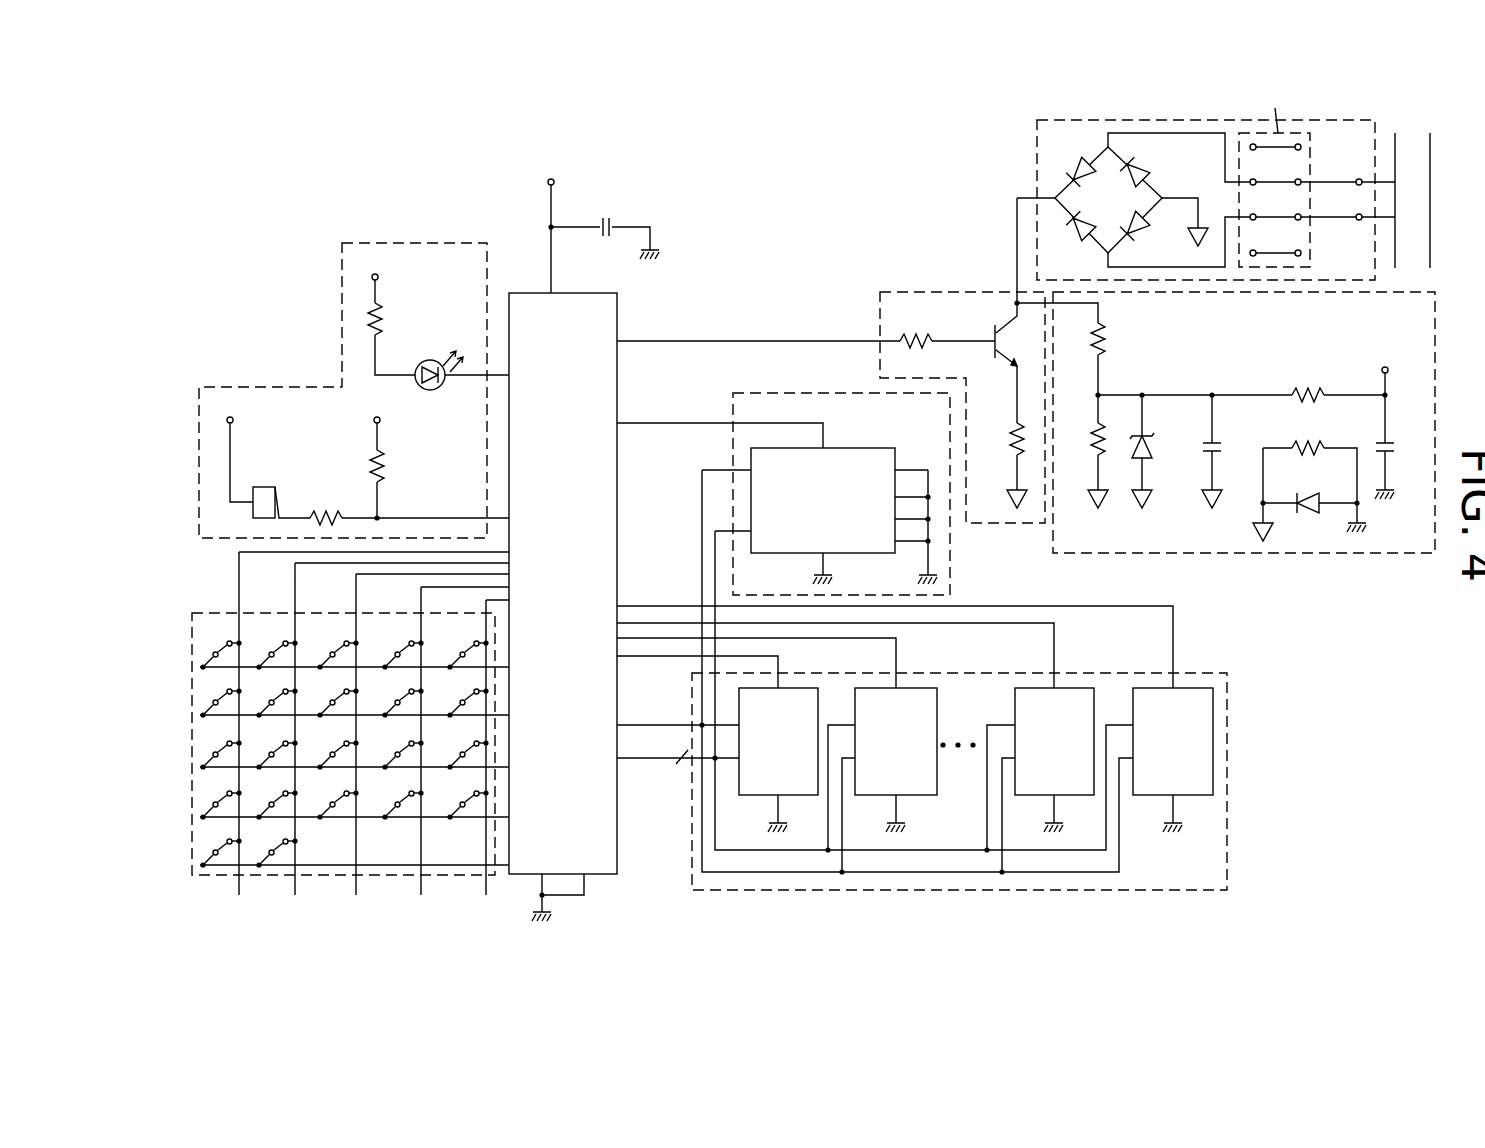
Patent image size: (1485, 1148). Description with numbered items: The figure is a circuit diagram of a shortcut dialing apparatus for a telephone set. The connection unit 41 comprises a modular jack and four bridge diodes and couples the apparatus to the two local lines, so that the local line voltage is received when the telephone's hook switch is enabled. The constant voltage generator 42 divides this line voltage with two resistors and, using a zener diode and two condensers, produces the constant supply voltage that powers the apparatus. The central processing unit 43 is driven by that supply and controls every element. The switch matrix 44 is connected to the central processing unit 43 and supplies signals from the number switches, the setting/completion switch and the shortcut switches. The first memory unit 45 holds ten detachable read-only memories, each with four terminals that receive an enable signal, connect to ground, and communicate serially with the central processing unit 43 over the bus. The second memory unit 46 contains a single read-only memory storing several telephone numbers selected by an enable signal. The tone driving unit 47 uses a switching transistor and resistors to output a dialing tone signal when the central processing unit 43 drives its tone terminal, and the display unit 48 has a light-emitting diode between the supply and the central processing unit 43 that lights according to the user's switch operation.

The connection unit 41 is at (1037, 151).
The constant voltage generator 42 is at (1304, 555).
The CPU 43 is at (618, 307).
The switch matrix 44 is at (227, 612).
The first memory unit 45 is at (1228, 780).
The second memory unit 46 is at (773, 392).
The DTMF driving unit 47 is at (880, 310).
The display unit 48 is at (342, 312).